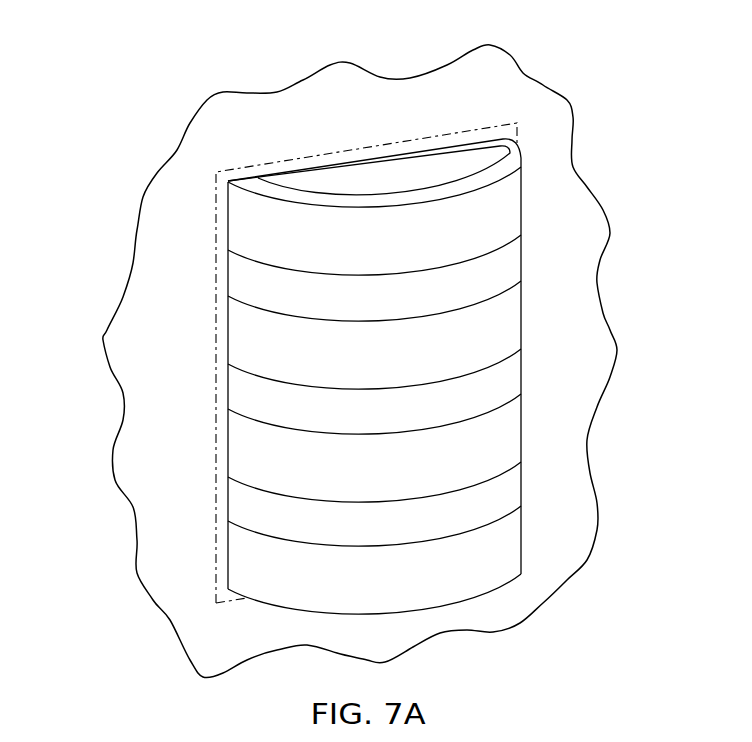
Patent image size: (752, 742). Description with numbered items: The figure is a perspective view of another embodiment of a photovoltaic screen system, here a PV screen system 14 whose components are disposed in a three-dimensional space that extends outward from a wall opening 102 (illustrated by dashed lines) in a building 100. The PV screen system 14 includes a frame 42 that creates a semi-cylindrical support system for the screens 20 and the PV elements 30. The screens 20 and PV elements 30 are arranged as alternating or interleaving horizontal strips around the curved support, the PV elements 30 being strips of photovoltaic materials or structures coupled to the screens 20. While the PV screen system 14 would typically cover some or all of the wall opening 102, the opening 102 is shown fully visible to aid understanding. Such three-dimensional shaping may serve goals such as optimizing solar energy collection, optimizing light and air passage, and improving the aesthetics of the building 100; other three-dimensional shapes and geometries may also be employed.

The PV screen system 14 is at (547, 253).
The screen 20 is at (508, 208).
The PV element 30 is at (237, 395).
The frame 42 is at (485, 183).
The building 100 is at (547, 122).
The wall opening 102 is at (216, 248).